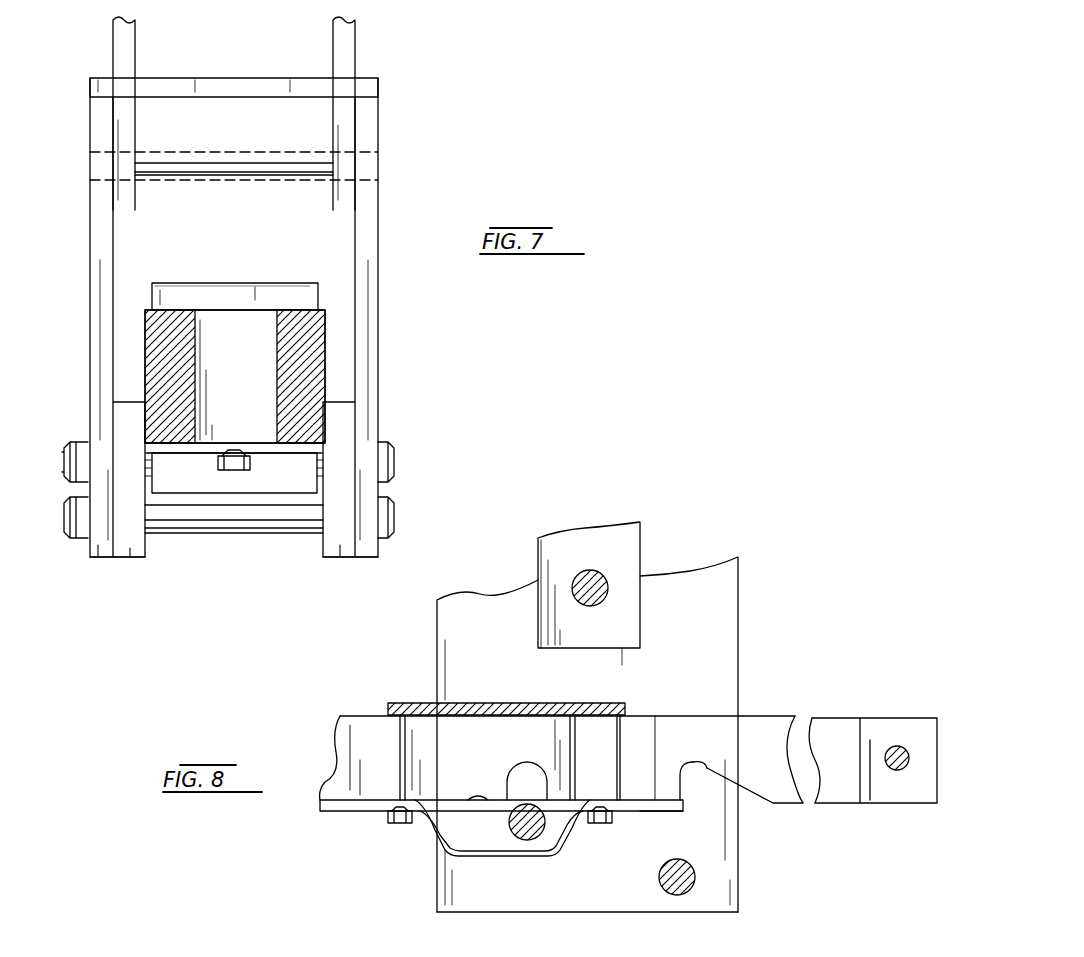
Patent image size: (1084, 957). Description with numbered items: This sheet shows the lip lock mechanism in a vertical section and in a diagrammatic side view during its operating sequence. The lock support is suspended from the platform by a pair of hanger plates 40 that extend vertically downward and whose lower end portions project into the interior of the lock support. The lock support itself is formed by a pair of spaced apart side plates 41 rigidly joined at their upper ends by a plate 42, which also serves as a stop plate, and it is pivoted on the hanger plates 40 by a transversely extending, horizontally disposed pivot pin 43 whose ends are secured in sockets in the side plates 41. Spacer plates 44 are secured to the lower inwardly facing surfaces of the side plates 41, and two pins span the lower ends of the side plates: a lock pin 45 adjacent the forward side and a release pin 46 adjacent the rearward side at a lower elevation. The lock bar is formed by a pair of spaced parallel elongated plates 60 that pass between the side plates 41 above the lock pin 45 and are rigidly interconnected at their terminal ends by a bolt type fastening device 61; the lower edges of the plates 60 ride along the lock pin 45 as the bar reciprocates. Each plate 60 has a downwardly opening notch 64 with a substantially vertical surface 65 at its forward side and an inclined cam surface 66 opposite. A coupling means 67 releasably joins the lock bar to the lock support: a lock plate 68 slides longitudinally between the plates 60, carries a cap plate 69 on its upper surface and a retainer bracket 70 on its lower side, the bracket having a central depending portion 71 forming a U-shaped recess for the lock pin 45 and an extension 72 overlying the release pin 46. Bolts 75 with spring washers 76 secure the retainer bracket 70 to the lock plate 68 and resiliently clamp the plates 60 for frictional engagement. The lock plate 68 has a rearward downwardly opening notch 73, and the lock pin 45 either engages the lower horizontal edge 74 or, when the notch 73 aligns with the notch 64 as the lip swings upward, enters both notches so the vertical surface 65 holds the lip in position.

In FIG. 7, the hanger plates 40 is at (122, 41).
In FIG. 8, the hanger plates 40 is at (633, 548).
In FIG. 7, the side plates 41 is at (97, 218).
In FIG. 8, the side plates 41 is at (738, 600).
In FIG. 7, the plate 42 is at (208, 78).
In FIG. 7, the pivot pin 43 is at (240, 162).
In FIG. 8, the pivot pin 43 is at (590, 572).
In FIG. 7, the spacer plates 44 is at (128, 552).
In FIG. 7, the lock pin 45 is at (392, 466).
In FIG. 8, the lock pin 45 is at (522, 840).
In FIG. 7, the release pin 46 is at (392, 522).
In FIG. 8, the release pin 46 is at (690, 878).
In FIG. 7, the elongated plates 60 is at (148, 330).
In FIG. 8, the elongated plates 60 is at (770, 716).
In FIG. 8, the bolt type fastening device 61 is at (897, 770).
In FIG. 8, the notch 64 is at (718, 766).
In FIG. 8, the vertical surface 65 is at (690, 766).
In FIG. 8, the inclined surface 66 is at (750, 795).
In FIG. 7, the coupling means 67 is at (213, 283).
In FIG. 8, the coupling means 67 is at (418, 700).
In FIG. 7, the lock plate 68 is at (258, 328).
In FIG. 8, the lock plate 68 is at (484, 730).
In FIG. 7, the cap plate 69 is at (181, 283).
In FIG. 8, the cap plate 69 is at (552, 715).
In FIG. 8, the retainer bracket 70 is at (420, 830).
In FIG. 7, the depending portion 71 is at (250, 480).
In FIG. 8, the depending portion 71 is at (452, 856).
In FIG. 8, the extension 72 is at (665, 812).
In FIG. 8, the notch 73 is at (526, 768).
In FIG. 8, the lower horizontal edge 74 is at (480, 798).
In FIG. 7, the bolts 75 is at (220, 466).
In FIG. 7, the spring washers 76 is at (248, 458).